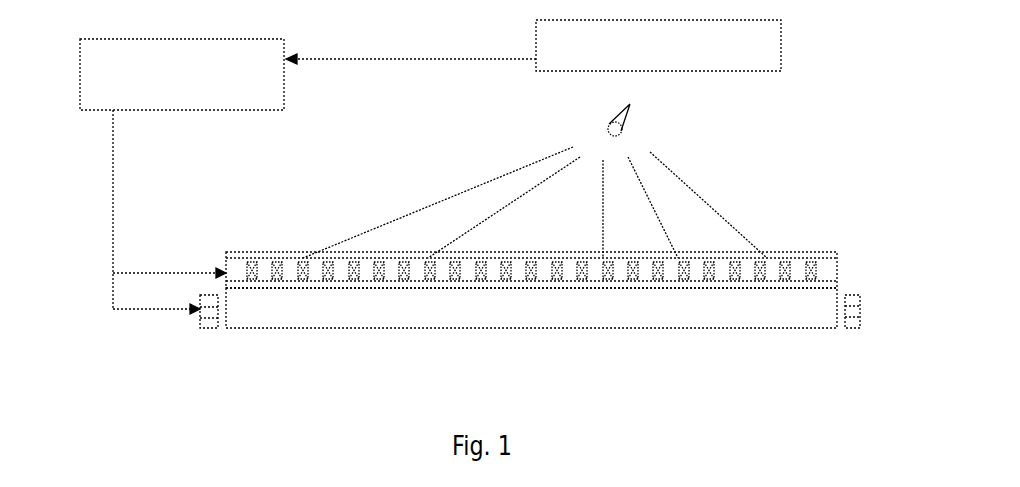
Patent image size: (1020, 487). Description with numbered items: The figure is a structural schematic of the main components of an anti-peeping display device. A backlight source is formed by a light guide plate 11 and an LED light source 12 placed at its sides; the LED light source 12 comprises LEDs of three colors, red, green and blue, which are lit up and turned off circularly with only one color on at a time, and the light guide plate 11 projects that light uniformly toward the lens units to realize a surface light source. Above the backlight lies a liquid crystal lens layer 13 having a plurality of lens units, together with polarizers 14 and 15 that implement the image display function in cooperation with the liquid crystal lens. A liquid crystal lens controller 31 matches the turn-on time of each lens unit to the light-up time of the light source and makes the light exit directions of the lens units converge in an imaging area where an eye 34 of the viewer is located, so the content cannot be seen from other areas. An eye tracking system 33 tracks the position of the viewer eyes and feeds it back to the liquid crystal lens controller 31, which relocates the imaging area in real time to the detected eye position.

The light guide plate 11 is at (247, 317).
The LED light source 12 is at (200, 330).
The liquid crystal lens layer 13 is at (226, 259).
The polarizer 14 is at (226, 285).
The polarizer 15 is at (278, 253).
The liquid crystal lens controller 31 is at (100, 108).
The eye tracking system 33 is at (758, 59).
The eye 34 is at (624, 122).